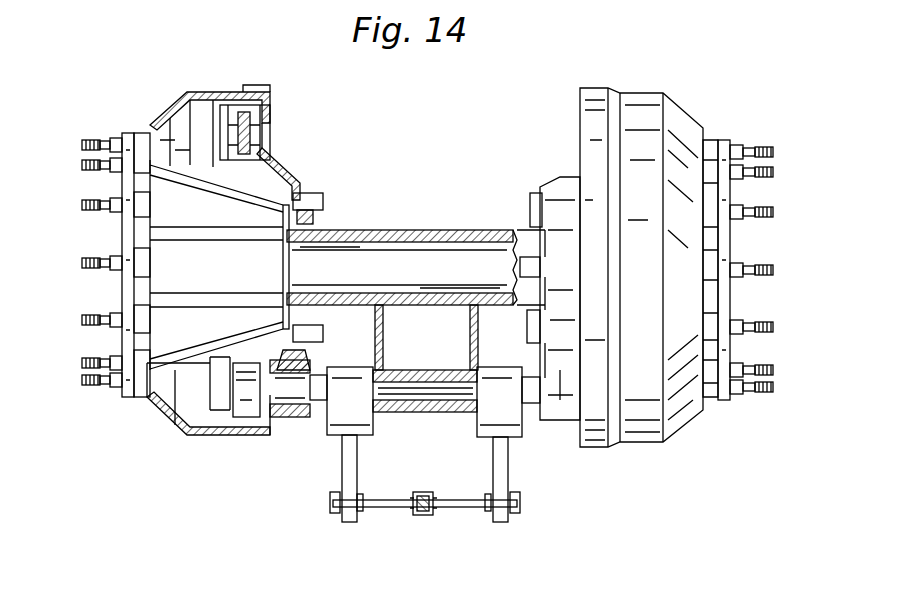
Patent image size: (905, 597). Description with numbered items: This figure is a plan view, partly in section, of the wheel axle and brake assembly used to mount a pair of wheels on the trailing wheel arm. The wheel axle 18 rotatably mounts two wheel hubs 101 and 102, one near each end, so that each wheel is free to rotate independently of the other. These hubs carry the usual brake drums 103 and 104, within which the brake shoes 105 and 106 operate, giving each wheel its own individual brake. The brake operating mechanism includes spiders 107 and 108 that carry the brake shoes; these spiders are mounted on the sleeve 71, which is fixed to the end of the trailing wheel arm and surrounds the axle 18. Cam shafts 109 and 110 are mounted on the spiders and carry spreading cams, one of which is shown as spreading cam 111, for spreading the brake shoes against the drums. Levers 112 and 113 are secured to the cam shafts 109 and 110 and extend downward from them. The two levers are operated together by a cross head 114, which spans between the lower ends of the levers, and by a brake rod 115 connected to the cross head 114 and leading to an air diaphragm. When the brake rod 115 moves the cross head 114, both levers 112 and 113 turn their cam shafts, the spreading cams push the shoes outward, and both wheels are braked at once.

The wheel axle 18 is at (358, 255).
The sleeve 71 is at (441, 235).
The wheel hub 101 is at (120, 237).
The wheel hub 102 is at (740, 244).
The brake drum 103 is at (224, 88).
The brake drum 104 is at (628, 106).
The brake shoe 105 is at (223, 175).
The brake shoe 106 is at (578, 172).
The spider 107 is at (286, 420).
The spider 108 is at (558, 405).
The cam shaft 109 is at (318, 385).
The cam shaft 110 is at (533, 380).
The spreading cam 111 is at (247, 402).
The lever 112 is at (346, 448).
The lever 113 is at (503, 469).
The cross head 114 is at (393, 506).
The brake rod 115 is at (428, 514).